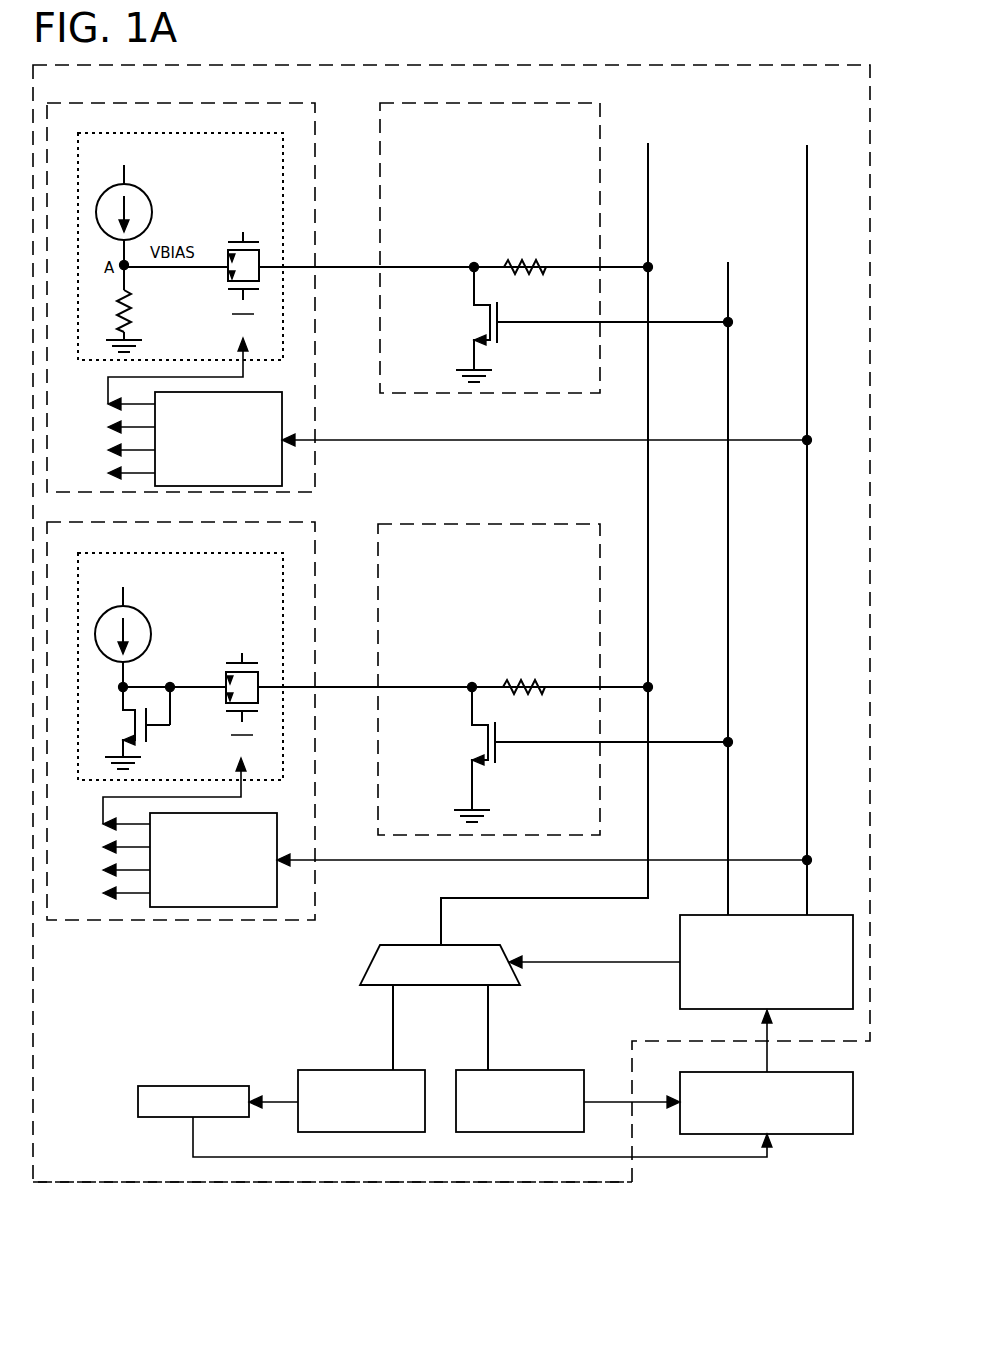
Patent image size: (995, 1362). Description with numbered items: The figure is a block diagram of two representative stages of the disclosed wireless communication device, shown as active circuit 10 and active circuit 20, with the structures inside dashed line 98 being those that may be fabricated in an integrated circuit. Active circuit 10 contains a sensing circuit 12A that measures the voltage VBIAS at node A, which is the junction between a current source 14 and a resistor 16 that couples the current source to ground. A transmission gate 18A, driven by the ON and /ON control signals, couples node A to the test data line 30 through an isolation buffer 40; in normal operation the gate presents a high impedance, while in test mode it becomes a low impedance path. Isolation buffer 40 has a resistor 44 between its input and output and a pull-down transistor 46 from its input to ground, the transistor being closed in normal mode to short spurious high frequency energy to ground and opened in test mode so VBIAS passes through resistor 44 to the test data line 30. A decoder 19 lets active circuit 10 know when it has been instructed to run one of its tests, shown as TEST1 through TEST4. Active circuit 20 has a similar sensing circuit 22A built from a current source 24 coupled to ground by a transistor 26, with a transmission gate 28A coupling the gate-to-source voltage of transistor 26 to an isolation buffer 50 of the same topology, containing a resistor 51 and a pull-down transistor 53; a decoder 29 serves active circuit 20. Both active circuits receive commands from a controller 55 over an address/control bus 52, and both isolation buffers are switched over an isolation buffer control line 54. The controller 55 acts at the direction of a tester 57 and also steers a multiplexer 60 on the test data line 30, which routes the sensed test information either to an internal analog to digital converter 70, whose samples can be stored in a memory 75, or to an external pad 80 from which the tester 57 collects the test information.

The active circuit 10 is at (95, 103).
The sensing circuit 12A is at (240, 133).
The current source 14 is at (140, 197).
The resistor 16 is at (130, 300).
The transmission gate 18A is at (230, 293).
The decoder 19 is at (248, 392).
The active circuit 20 is at (95, 522).
The sensing circuit 22A is at (240, 553).
The current source 24 is at (139, 619).
The transistor 26 is at (126, 717).
The transmission gate 28A is at (230, 714).
The decoder 29 is at (245, 813).
The test data line 30 is at (648, 182).
The isolation buffer 40 is at (483, 103).
The resistor 44 is at (523, 262).
The pull-down transistor 46 is at (471, 311).
The isolation buffer 50 is at (483, 524).
The resistor 51 is at (522, 682).
The address/control bus 52 is at (807, 182).
The pull-down transistor 53 is at (469, 731).
The isolation buffer control line 54 is at (728, 305).
The controller 55 is at (680, 952).
The tester 57 is at (735, 1072).
The multiplexer 60 is at (410, 945).
The internal analog to digital converter 70 is at (312, 1070).
The memory 75 is at (170, 1086).
The external pad 80 is at (535, 1070).
The dashed line 98 is at (520, 1182).